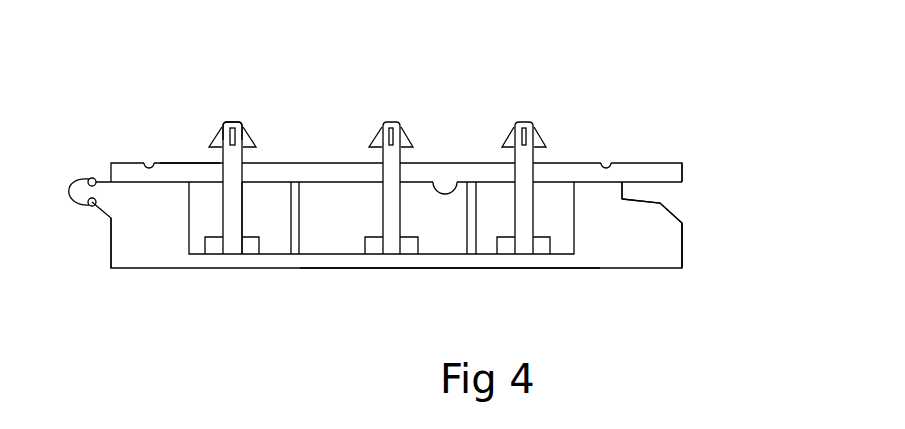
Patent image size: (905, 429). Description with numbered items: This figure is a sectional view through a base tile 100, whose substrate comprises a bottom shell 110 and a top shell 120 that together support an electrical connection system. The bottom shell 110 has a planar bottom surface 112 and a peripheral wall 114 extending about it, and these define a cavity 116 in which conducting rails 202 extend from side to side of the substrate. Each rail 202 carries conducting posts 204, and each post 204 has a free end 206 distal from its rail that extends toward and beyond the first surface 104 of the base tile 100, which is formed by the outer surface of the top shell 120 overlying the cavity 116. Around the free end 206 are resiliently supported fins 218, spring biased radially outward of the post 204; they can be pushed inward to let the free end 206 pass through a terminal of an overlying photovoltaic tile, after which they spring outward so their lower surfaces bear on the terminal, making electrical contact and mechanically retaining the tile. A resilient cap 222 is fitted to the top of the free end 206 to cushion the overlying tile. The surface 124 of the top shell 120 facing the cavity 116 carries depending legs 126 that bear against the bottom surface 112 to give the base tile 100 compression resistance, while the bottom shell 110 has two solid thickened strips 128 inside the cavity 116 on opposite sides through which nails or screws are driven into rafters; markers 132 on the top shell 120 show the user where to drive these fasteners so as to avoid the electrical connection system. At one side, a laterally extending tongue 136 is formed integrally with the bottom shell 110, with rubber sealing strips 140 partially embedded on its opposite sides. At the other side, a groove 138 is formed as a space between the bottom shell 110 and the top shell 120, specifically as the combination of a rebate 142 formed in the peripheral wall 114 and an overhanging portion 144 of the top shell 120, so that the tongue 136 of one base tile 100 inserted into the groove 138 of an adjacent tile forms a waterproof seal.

The base tile 100 is at (132, 108).
The first surface 104 is at (560, 163).
The bottom shell 110 is at (681, 278).
The bottom surface 112 is at (450, 270).
The peripheral wall 114 is at (682, 230).
The cavity 116 is at (340, 229).
The top shell 120 is at (668, 157).
The surface of the top shell 124 is at (457, 190).
The legs 126 is at (300, 226).
The strips 128 is at (147, 237).
The markers 132 is at (142, 162).
The tongue 136 is at (64, 208).
The groove 138 is at (687, 202).
The rubber sealing strips 140 is at (89, 179).
The rebate 142 is at (660, 203).
The overhanging portion 144 is at (683, 163).
The conducting rails 202 is at (215, 247).
The conducting post 204 is at (245, 208).
The free end 206 is at (397, 116).
The fins 218 is at (372, 140).
The resilient cap 222 is at (231, 121).